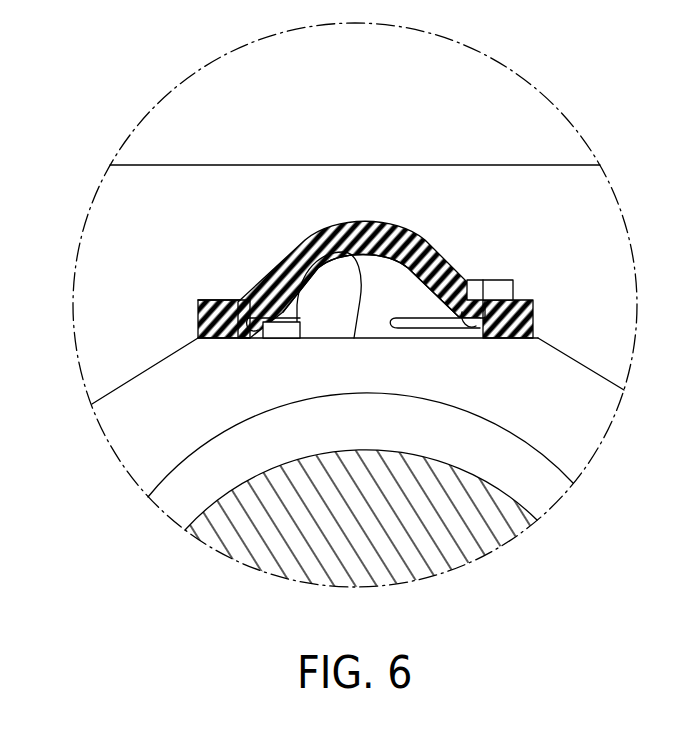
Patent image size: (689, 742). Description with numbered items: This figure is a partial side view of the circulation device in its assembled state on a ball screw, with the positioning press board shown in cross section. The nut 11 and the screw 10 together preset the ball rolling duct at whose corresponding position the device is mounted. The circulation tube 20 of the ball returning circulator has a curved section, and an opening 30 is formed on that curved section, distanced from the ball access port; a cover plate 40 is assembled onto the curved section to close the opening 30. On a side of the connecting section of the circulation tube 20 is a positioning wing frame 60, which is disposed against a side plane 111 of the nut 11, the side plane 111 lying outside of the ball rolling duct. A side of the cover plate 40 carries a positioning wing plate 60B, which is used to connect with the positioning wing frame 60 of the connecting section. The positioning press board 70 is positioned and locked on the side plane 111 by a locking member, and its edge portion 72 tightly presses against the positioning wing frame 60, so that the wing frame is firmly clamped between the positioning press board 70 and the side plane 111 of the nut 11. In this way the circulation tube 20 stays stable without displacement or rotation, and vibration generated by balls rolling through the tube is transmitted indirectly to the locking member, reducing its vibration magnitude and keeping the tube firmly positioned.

The screw 10 is at (283, 545).
The nut 11 is at (133, 372).
The circulation tube 20 is at (387, 338).
The opening 30 is at (345, 252).
The cover plate 40 is at (413, 290).
The positioning wing frame 60 is at (233, 339).
The positioning wing plate 60B is at (500, 339).
The positioning press board 70 is at (398, 229).
The edge portion 72 is at (483, 282).
The side plane 111 is at (455, 338).